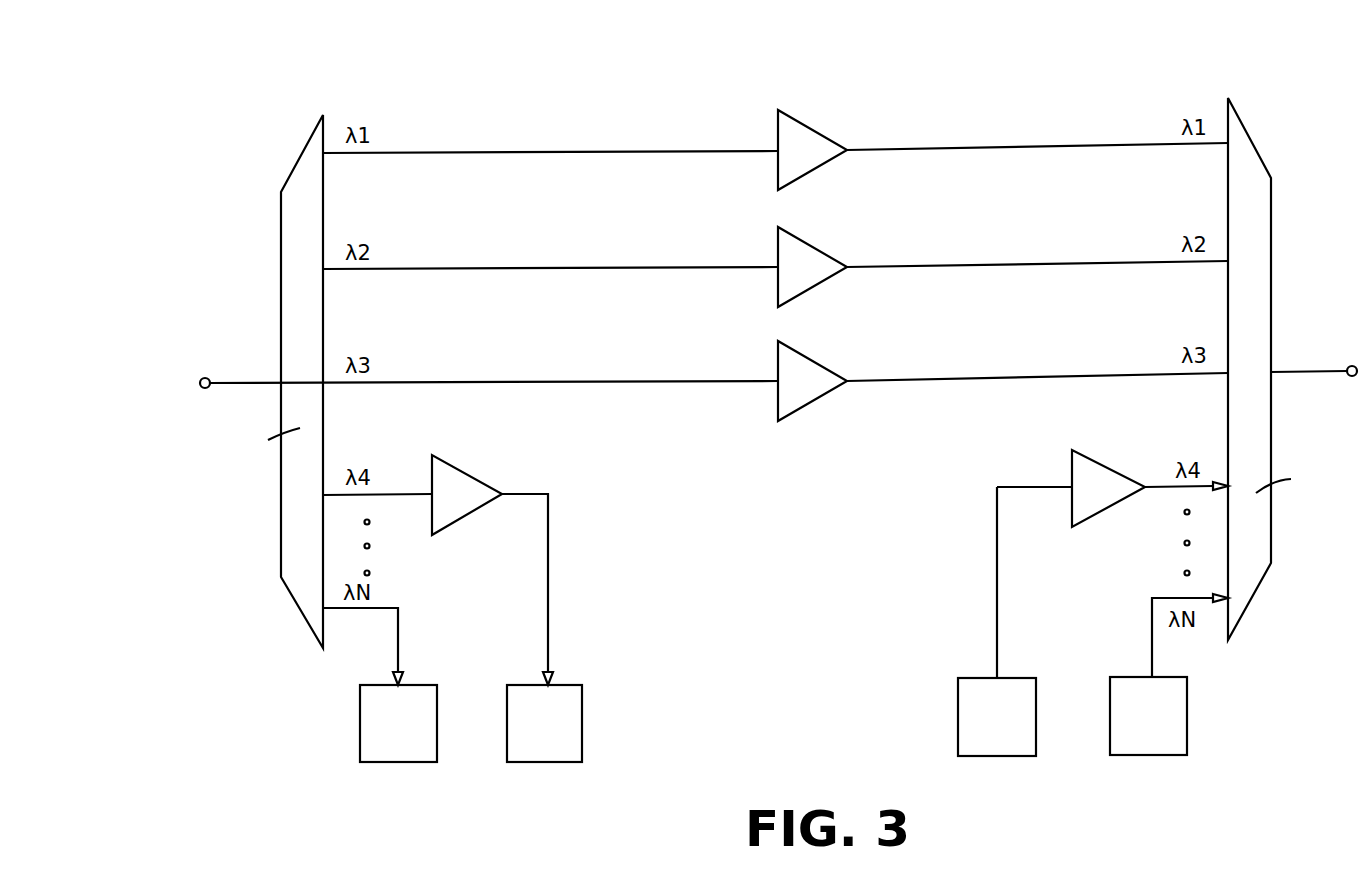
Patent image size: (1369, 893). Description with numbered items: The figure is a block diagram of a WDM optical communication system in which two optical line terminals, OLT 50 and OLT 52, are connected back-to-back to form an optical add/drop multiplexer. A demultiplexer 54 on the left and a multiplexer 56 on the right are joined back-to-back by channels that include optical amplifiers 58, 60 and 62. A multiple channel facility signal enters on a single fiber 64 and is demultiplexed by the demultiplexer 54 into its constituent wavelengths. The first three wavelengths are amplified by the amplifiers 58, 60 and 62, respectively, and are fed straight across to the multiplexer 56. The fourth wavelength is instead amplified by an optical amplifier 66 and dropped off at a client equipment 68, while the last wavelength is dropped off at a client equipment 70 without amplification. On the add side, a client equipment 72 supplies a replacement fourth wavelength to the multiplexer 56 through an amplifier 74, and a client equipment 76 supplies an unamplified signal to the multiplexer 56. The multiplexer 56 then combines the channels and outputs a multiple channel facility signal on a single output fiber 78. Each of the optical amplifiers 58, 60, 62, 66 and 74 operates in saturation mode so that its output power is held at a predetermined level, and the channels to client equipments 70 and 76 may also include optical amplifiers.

The optical line terminal 50 is at (270, 334).
The optical line terminal 52 is at (1288, 338).
The demultiplexer 54 is at (297, 250).
The multiplexer 56 is at (1260, 263).
The optical amplifier 58 is at (813, 135).
The optical amplifier 60 is at (808, 251).
The optical amplifier 62 is at (808, 361).
The single fiber 64 is at (248, 380).
The optical amplifier 66 is at (457, 475).
The client equipment 68 is at (578, 711).
The client equipment 70 is at (433, 711).
The client equipment 72 is at (1018, 681).
The optical amplifier 74 is at (1094, 466).
The client equipment 76 is at (1182, 716).
The single output fiber 78 is at (1317, 371).